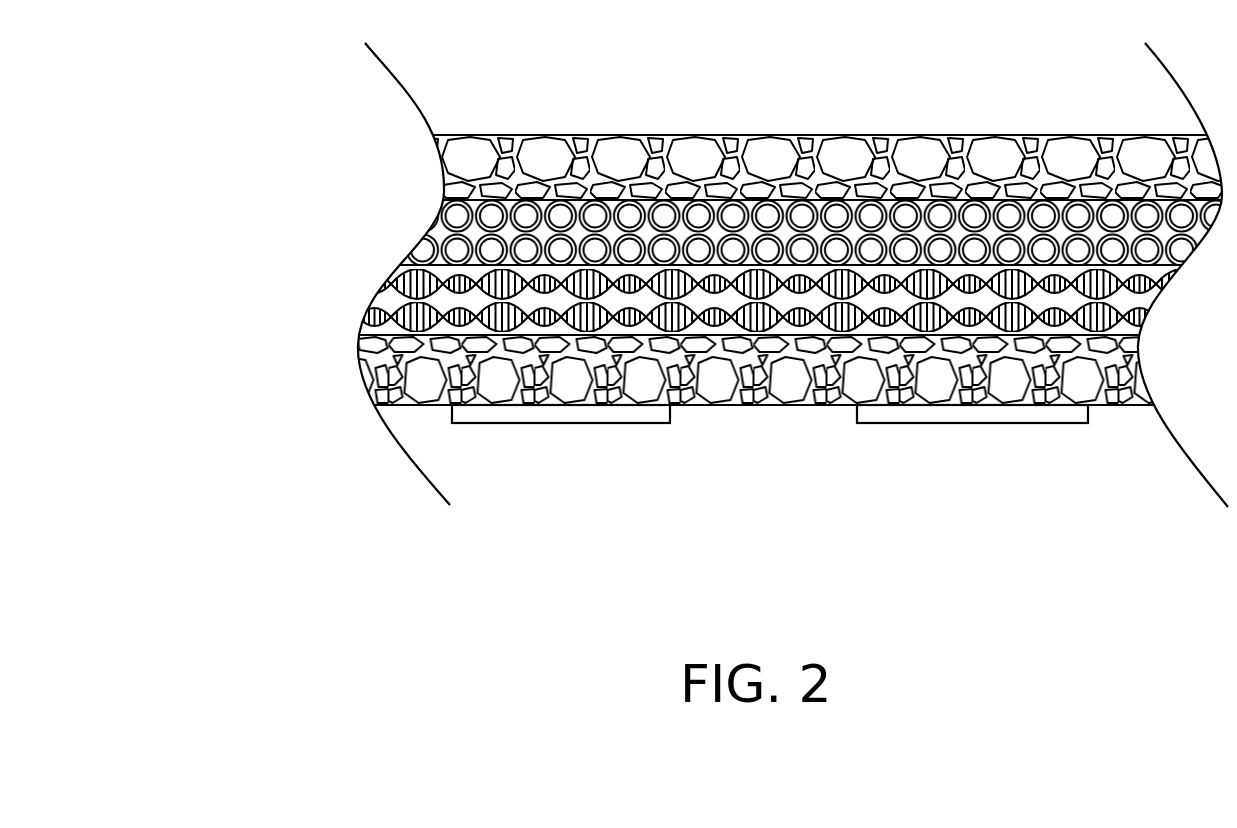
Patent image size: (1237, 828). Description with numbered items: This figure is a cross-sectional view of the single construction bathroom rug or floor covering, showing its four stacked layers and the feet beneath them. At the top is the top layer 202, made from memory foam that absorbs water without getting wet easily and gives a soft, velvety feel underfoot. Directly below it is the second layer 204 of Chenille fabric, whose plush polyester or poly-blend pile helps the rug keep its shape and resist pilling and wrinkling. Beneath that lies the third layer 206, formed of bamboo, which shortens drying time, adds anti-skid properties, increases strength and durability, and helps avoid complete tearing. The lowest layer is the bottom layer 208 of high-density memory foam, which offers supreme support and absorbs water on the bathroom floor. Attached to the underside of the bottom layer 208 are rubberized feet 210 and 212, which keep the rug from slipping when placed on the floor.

The top layer 202 is at (500, 158).
The second layer 204 is at (440, 228).
The third layer 206 is at (385, 302).
The bottom layer 208 is at (355, 363).
The rubberized foot 210 is at (612, 425).
The rubberized foot 212 is at (1012, 423).